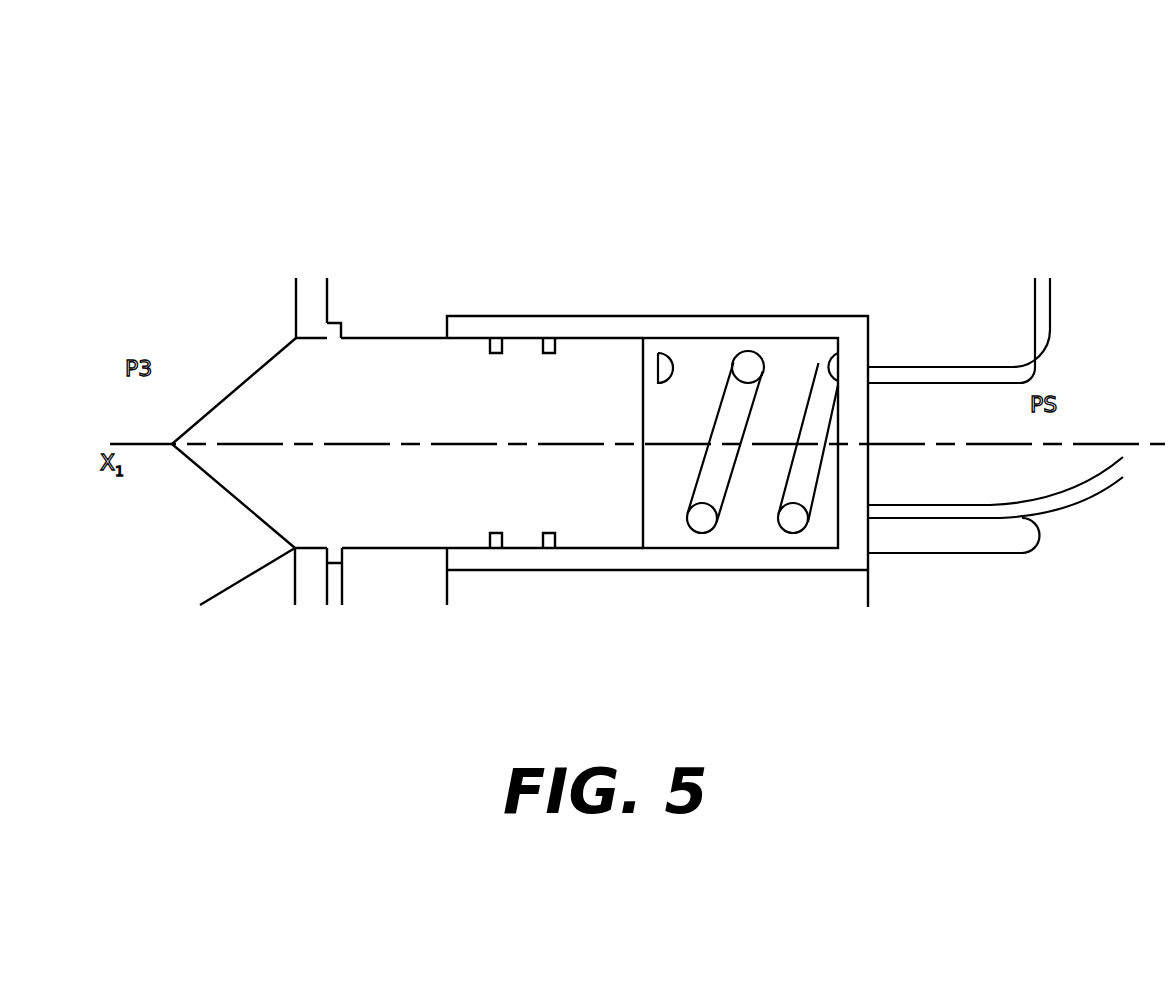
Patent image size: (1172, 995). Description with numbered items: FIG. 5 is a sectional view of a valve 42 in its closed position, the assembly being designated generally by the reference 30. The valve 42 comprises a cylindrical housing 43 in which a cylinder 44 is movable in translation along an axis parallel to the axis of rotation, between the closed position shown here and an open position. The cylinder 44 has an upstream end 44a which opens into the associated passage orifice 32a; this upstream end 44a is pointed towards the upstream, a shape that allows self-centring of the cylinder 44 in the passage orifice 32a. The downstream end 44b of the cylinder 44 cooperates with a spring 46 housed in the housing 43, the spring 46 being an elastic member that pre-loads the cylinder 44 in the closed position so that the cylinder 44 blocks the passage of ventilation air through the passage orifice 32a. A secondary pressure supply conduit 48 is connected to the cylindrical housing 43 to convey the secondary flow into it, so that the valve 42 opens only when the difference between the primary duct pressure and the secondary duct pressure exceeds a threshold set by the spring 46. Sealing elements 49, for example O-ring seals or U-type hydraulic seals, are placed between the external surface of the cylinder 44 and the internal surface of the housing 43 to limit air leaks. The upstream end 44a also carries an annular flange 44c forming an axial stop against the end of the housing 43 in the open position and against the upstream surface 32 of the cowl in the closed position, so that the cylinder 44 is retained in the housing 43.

The burner assembly 30 is at (875, 194).
The upstream surface of the cowl 32 is at (310, 302).
The passage orifice 32a is at (312, 548).
The valve 42 is at (606, 558).
The cylindrical housing 43 is at (756, 326).
The cylinder 44 is at (417, 487).
The upstream end 44a is at (250, 470).
The downstream end 44b is at (618, 382).
The annular flange 44c is at (336, 322).
The spring 46 is at (703, 520).
The secondary pressure supply conduit 48 is at (1078, 498).
The sealing elements 49 is at (540, 337).